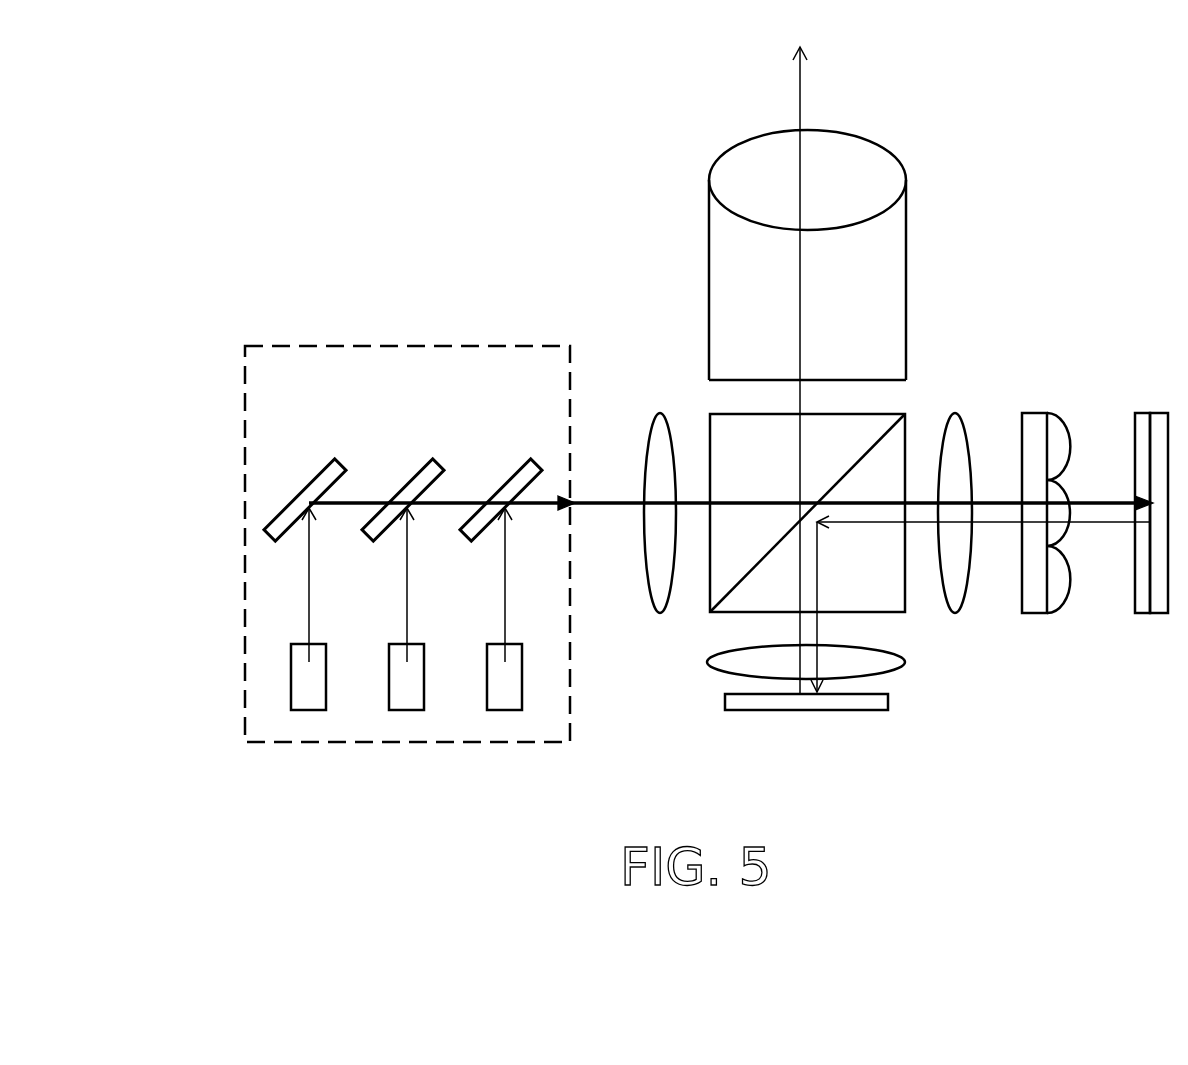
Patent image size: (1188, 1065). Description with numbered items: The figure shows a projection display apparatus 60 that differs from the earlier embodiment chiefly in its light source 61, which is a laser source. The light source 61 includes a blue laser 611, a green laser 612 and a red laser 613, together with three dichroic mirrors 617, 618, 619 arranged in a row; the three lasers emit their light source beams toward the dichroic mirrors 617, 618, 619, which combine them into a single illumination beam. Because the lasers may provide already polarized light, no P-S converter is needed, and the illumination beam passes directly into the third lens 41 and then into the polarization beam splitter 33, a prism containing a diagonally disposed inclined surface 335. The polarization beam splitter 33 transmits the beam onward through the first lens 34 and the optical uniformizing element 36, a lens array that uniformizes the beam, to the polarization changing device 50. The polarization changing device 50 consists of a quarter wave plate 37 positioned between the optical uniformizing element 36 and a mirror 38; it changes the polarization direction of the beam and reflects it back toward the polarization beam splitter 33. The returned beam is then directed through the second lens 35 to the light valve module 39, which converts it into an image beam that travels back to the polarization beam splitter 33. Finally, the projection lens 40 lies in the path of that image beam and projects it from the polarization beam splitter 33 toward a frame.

The projection display apparatus 60 is at (247, 80).
The light source 61 is at (245, 545).
The blue laser 611 is at (309, 712).
The green laser 612 is at (407, 712).
The red laser 613 is at (505, 712).
The dichroic mirror 617 is at (308, 474).
The dichroic mirror 618 is at (406, 474).
The dichroic mirror 619 is at (504, 474).
The third lens 41 is at (660, 615).
The polarization beam splitter 33 is at (908, 603).
The inclined surface 335 is at (900, 397).
The first lens 34 is at (955, 615).
The second lens 35 is at (902, 672).
The optical uniformizing element 36 is at (1032, 614).
The quarter wave plate 37 is at (1143, 614).
The mirror 38 is at (1157, 614).
The polarization changing device 50 is at (1115, 710).
The light valve module 39 is at (808, 712).
The projection lens 40 is at (861, 131).